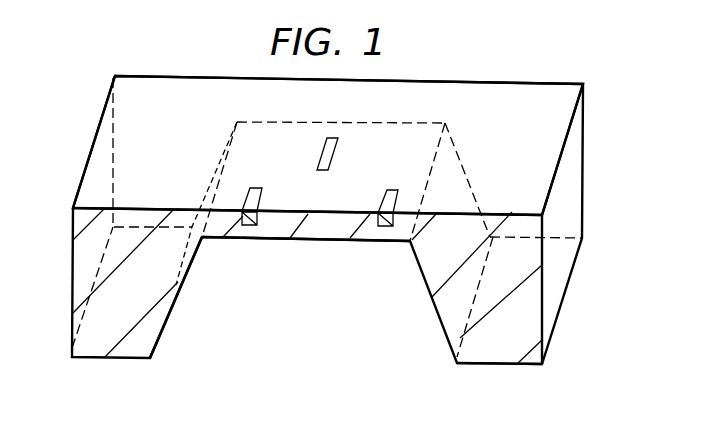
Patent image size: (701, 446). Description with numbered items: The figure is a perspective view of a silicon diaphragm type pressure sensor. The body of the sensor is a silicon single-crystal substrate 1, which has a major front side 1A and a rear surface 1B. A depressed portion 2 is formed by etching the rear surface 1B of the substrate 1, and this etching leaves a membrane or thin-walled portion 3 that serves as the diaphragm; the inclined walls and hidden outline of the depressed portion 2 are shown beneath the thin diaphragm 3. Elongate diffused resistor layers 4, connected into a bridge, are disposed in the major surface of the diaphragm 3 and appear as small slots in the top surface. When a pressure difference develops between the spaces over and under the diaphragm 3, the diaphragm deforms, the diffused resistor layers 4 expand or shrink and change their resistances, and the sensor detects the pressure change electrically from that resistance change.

The silicon single-crystal substrate 1 is at (548, 302).
The major surface of substrate 1A is at (552, 132).
The rear surface of substrate 1B is at (508, 348).
The depressed portion 2 is at (185, 273).
The thin-walled portion (diaphragm) 3 is at (333, 232).
The diffused resistor layers 4 is at (375, 232).